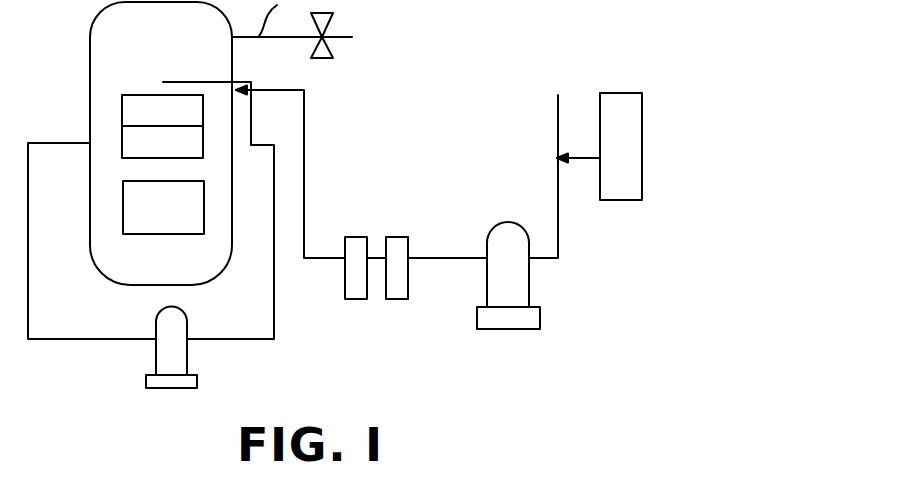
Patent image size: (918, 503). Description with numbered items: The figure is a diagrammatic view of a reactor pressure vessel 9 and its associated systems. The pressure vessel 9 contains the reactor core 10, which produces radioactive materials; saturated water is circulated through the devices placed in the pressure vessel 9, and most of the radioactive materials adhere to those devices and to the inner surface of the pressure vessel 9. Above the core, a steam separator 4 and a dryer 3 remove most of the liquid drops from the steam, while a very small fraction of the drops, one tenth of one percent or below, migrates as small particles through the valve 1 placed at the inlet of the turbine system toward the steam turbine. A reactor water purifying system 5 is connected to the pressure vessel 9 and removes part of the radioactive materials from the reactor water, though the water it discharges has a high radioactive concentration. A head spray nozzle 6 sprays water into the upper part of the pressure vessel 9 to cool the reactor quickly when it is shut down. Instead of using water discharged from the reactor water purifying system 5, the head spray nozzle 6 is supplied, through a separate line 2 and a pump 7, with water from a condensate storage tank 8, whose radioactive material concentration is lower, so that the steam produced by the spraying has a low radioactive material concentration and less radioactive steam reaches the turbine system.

The valve 1 is at (335, 18).
The gas supply pipe 2 is at (314, 128).
The dryer 3 is at (135, 106).
The steam separator 4 is at (140, 141).
The reactor water purifying system 5 is at (203, 353).
The head spray nozzle 6 is at (175, 82).
The pump 7 is at (491, 212).
The condensate storage tank 8 is at (619, 93).
The reactor pressure vessel 9 is at (100, 13).
The reactor core 10 is at (174, 218).